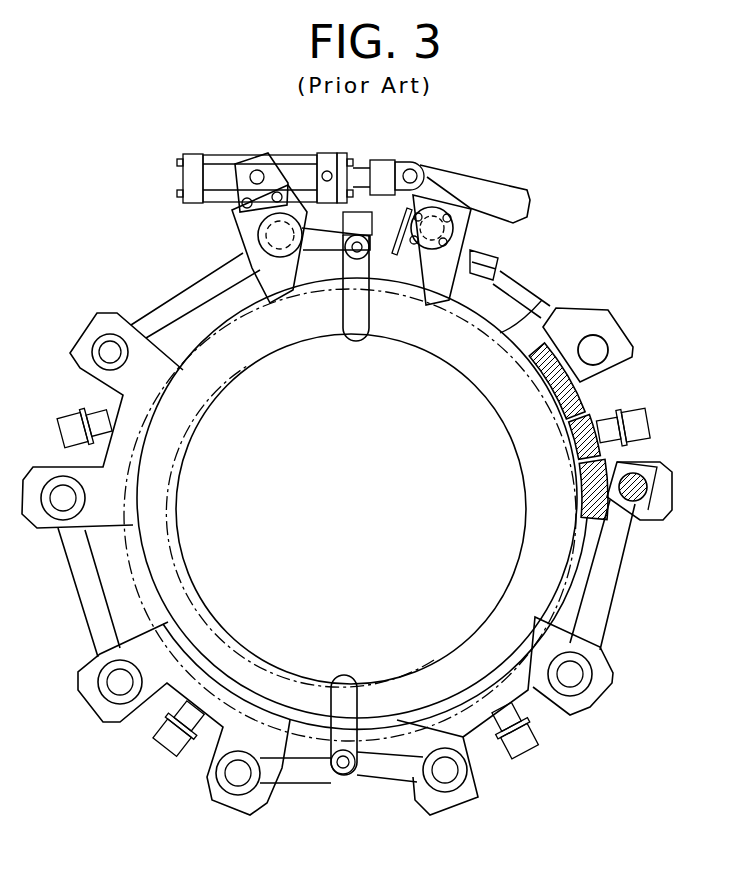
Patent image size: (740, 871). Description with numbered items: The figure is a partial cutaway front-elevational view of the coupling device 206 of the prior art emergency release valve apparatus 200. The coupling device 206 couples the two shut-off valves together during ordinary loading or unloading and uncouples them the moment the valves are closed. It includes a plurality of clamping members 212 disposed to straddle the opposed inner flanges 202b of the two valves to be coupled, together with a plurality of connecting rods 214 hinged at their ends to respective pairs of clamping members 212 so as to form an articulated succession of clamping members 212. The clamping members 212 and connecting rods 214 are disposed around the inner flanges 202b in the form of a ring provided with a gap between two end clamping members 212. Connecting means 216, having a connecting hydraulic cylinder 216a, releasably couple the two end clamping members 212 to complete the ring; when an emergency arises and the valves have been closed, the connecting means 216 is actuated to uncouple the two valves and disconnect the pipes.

The emergency release valve apparatus 200 is at (548, 224).
The inner flanges 202b is at (557, 293).
The coupling device 206 is at (145, 727).
The clamping members 212 is at (78, 328).
The connecting rods 214 is at (180, 283).
The connecting means 216 is at (538, 283).
The connecting hydraulic cylinder 216a is at (296, 157).